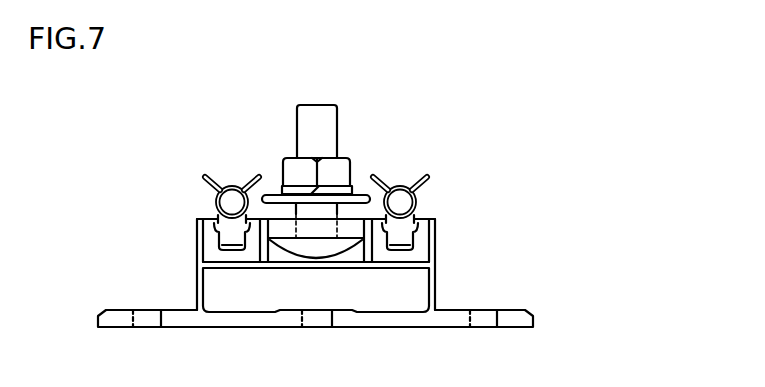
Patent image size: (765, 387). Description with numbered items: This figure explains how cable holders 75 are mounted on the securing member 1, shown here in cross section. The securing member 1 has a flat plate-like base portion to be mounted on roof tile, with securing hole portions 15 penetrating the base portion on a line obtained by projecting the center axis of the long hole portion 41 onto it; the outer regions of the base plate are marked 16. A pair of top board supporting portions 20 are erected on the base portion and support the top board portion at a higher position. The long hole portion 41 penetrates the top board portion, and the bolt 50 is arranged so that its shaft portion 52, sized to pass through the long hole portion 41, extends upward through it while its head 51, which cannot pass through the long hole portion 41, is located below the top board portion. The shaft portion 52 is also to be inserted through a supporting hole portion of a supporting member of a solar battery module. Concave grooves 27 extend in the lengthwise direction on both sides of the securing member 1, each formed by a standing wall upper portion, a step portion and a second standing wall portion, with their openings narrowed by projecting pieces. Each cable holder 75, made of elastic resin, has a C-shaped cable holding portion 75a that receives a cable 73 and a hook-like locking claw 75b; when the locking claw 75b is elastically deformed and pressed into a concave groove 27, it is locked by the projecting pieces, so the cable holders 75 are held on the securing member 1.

The securing member 1 is at (503, 248).
The securing hole portions 15 is at (304, 329).
The flange portion 16 is at (134, 329).
The top board supporting portions 20 is at (408, 232).
The concave grooves 27 is at (196, 241).
The long hole portion 41 is at (296, 232).
The bolt 50 is at (317, 104).
The head 51 is at (343, 258).
The shaft portion 52 is at (338, 129).
The cables 73 is at (233, 180).
The cable holders 75 is at (291, 188).
The cable holding portion 75a is at (208, 189).
The locking claw 75b is at (230, 240).